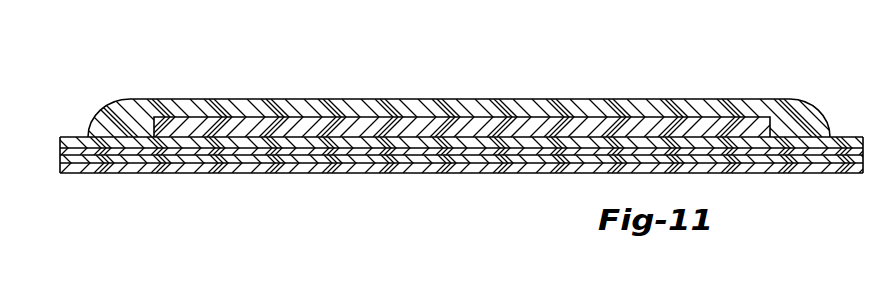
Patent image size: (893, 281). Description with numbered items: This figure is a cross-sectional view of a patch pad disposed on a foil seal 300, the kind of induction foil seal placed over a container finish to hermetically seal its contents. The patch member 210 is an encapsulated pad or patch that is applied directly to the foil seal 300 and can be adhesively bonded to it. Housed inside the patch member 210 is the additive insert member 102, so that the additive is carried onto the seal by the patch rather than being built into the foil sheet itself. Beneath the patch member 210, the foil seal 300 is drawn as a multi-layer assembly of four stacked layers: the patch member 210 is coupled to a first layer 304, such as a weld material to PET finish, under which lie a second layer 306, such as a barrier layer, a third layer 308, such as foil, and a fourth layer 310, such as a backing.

The foil seal 300 is at (461, 133).
The patch member 210 is at (661, 98).
The additive insert member 102 is at (557, 130).
The first layer 304 is at (253, 142).
The second layer 306 is at (330, 151).
The third layer 308 is at (405, 160).
The fourth layer 310 is at (518, 173).